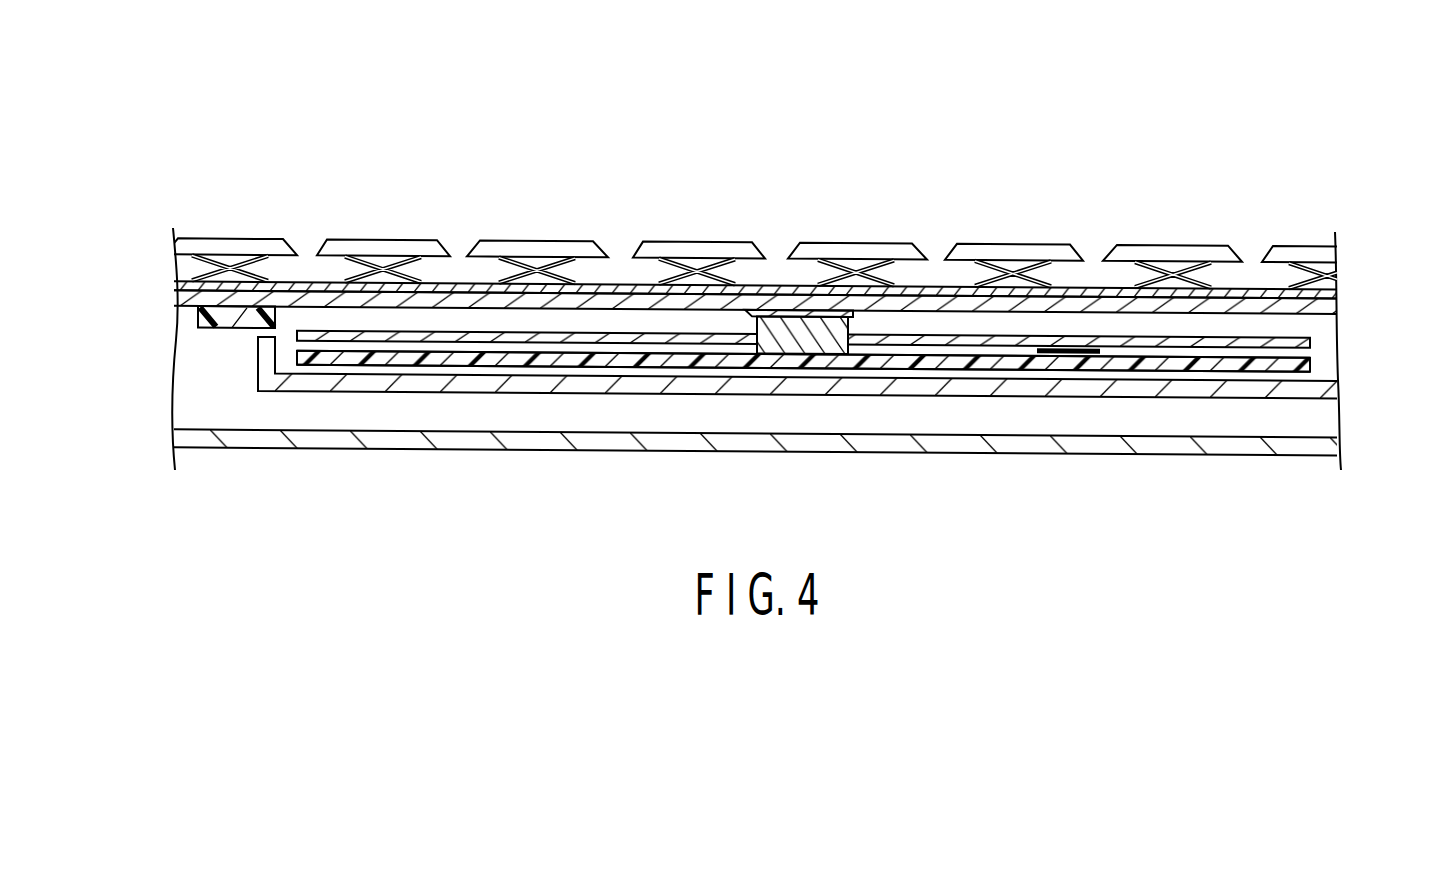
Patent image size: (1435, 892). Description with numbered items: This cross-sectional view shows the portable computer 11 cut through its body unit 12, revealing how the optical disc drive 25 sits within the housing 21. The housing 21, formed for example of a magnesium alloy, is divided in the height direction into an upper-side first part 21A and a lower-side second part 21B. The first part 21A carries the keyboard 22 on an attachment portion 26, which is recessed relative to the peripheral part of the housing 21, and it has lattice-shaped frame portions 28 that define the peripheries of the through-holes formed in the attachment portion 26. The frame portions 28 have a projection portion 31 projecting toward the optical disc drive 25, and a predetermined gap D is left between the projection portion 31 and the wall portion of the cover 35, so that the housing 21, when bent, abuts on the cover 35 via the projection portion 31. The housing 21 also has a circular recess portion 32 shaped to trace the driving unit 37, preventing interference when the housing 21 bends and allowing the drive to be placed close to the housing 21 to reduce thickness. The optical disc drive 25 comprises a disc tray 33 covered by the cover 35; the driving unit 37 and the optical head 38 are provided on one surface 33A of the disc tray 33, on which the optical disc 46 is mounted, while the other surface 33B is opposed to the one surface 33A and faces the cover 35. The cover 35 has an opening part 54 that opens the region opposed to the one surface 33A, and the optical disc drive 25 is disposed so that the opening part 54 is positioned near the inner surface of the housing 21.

The portable computer 11 is at (749, 286).
The body unit 12 is at (749, 307).
The housing 21 is at (711, 404).
The first part 21A is at (188, 300).
The second part 21B is at (180, 439).
The keyboard 22 is at (1008, 245).
The optical disc drive 25 is at (1335, 348).
The attachment portion 26 is at (767, 245).
The frame portions 28 is at (306, 287).
The projection portion 31 is at (197, 317).
The circular recess portion 32 is at (783, 309).
The disc tray 33 is at (846, 350).
The one surface 33A is at (467, 352).
The other surface 33B is at (463, 382).
The cover 35 is at (997, 397).
The driving unit 37 is at (850, 330).
The optical head 38 is at (1097, 348).
The optical disc 46 is at (843, 269).
The opening part 54 is at (1320, 327).
The predetermined gap D is at (234, 340).